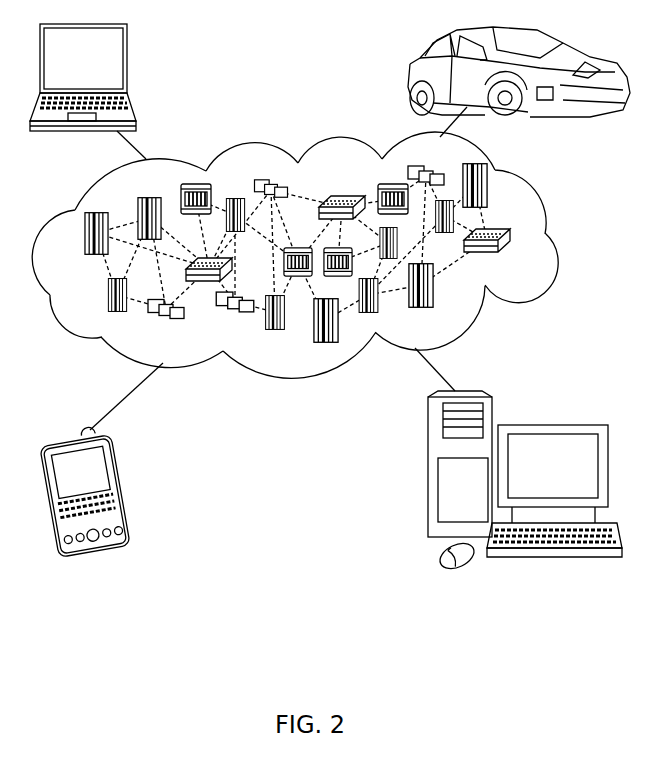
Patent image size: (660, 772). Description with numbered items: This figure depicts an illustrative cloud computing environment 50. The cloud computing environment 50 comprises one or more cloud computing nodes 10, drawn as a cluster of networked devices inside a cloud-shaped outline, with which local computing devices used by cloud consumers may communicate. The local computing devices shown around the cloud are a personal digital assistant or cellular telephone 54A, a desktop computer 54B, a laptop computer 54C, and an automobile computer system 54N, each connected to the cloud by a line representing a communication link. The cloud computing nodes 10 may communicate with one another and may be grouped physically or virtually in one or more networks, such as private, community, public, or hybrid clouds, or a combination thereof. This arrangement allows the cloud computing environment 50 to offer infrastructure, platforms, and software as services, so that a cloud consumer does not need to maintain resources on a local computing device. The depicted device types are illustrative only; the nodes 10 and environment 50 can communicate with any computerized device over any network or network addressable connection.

The laptop computer 54C is at (130, 63).
The automobile computer system 54N is at (410, 78).
The cloud computing environment 50 is at (555, 238).
The cloud computing node 10 is at (514, 260).
The personal digital assistant or cellular telephone 54A is at (121, 487).
The desktop computer 54B is at (551, 424).